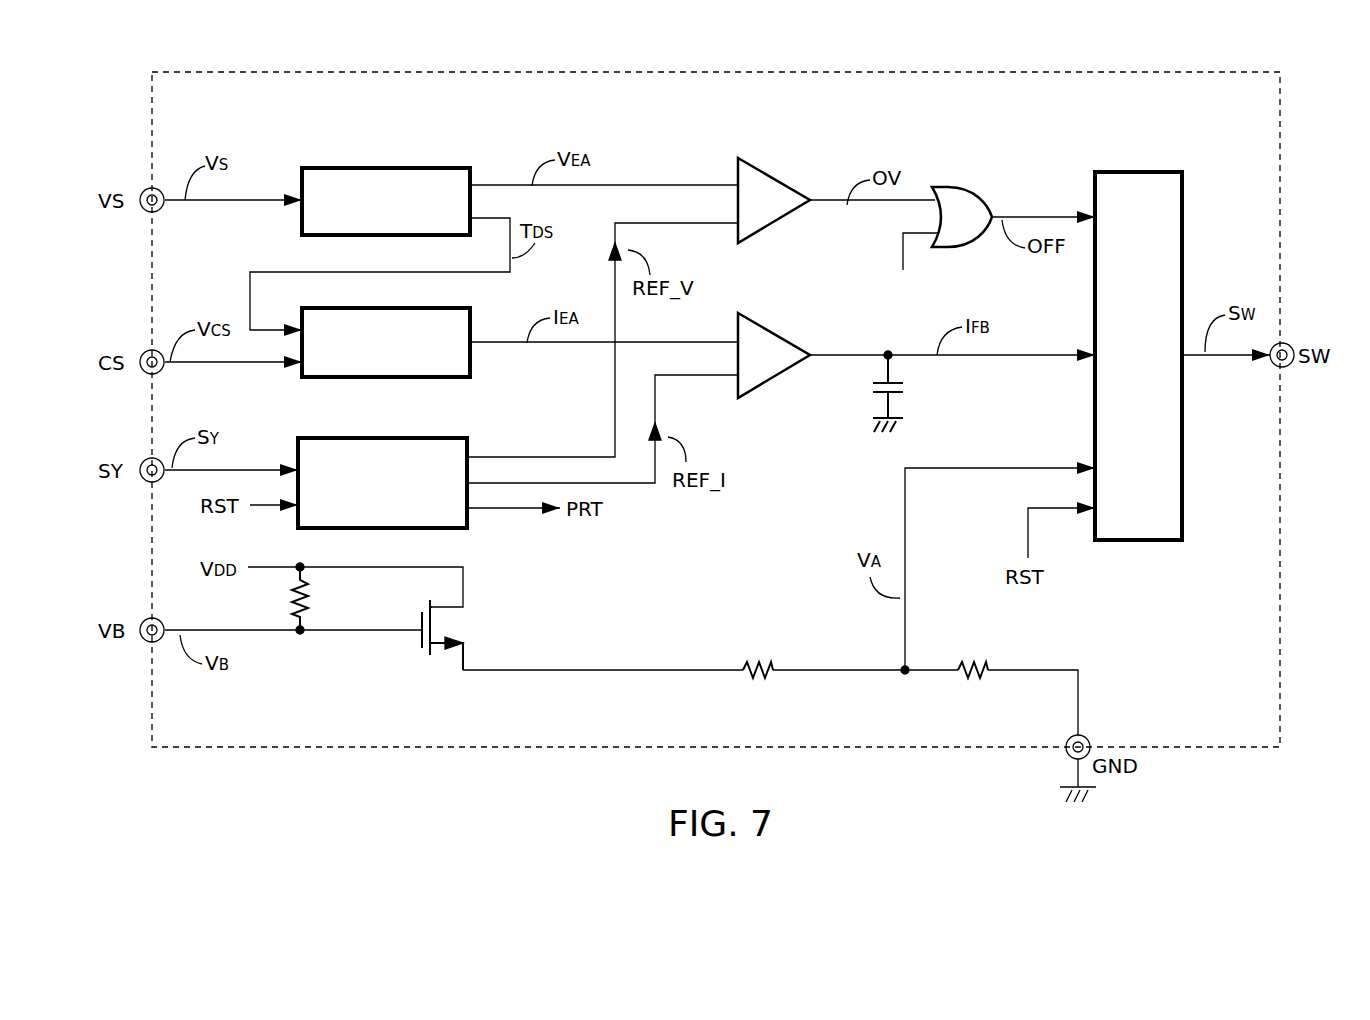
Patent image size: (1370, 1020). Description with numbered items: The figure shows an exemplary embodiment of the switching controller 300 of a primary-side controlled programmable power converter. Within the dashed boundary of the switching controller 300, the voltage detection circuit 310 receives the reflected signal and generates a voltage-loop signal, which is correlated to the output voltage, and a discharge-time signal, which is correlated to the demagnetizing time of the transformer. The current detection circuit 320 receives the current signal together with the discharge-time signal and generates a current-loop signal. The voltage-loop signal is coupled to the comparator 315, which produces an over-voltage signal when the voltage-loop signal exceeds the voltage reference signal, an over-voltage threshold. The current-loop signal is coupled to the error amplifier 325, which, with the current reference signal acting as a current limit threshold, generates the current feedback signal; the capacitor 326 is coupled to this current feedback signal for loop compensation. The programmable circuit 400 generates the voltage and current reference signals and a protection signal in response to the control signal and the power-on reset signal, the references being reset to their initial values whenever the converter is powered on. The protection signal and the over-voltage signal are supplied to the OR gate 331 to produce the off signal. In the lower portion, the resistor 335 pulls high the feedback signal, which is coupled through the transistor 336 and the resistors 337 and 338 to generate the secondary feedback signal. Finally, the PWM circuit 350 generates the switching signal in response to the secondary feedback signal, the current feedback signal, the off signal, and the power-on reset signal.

The switching controller 300 is at (1280, 105).
The voltage detection circuit 310 is at (382, 168).
The current detection circuit 320 is at (382, 377).
The programmable circuit 400 is at (382, 483).
The comparator 315 is at (760, 172).
The error amplifier 325 is at (760, 327).
The capacitor 326 is at (906, 390).
The OR gate 331 is at (960, 187).
The PWM circuit 350 is at (1130, 172).
The resistor 335 is at (318, 598).
The transistor 336 is at (465, 630).
The resistor 337 is at (760, 680).
The resistor 338 is at (970, 655).